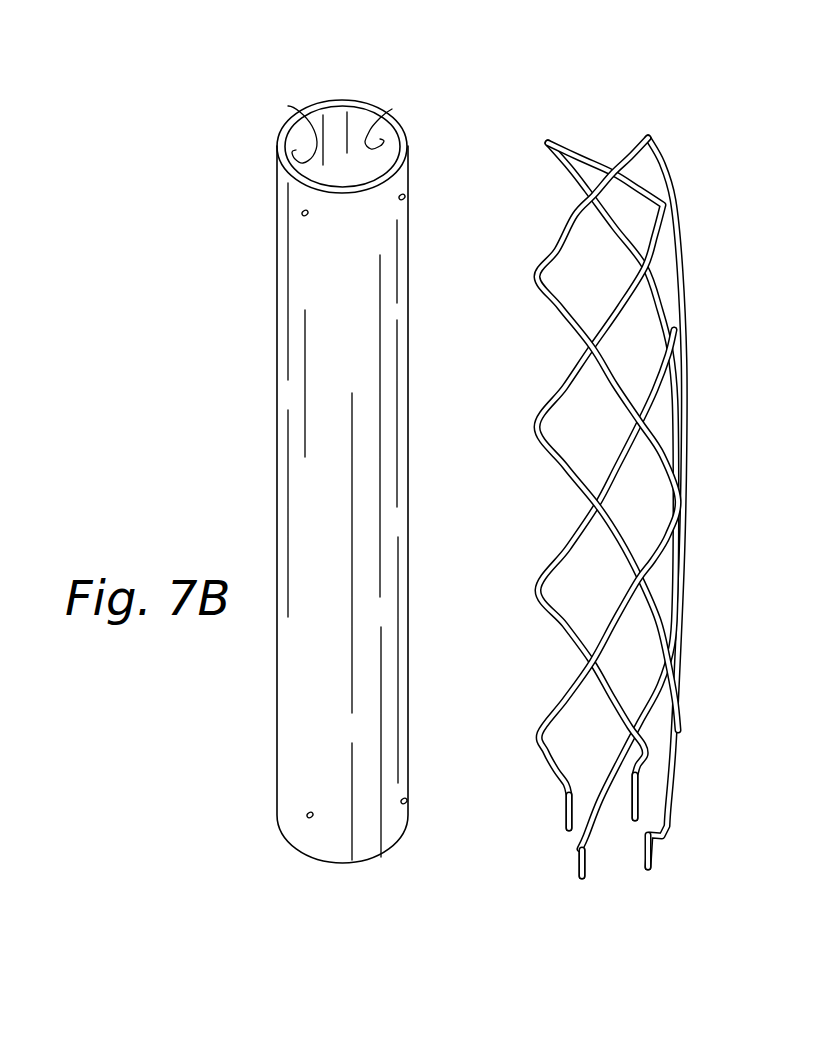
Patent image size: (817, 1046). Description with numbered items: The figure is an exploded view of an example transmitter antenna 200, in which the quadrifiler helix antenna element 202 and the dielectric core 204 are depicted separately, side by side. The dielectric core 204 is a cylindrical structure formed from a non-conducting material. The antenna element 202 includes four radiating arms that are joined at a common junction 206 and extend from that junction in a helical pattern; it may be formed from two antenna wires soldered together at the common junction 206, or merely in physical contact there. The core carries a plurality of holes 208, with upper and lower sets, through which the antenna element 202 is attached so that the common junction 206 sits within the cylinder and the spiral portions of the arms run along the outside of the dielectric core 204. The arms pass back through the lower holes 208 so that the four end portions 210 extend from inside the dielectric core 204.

The transmitter antenna 200 is at (712, 72).
The quadrifiler helix antenna element 202 is at (676, 169).
The dielectric core 204 is at (312, 468).
The common junction 206 is at (613, 165).
The holes 208 is at (288, 106).
The end portions 210 is at (577, 867).